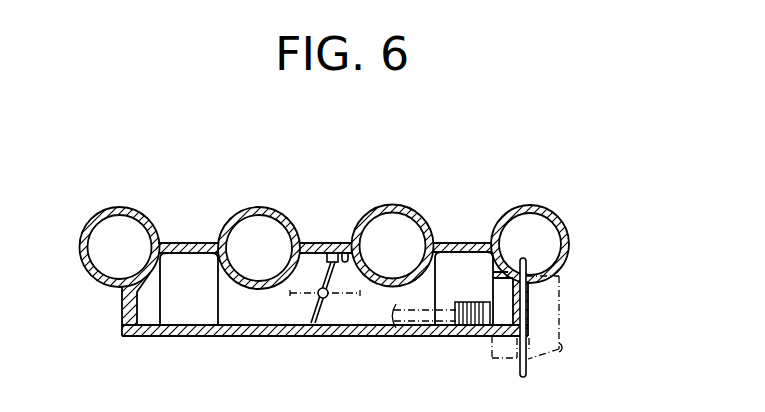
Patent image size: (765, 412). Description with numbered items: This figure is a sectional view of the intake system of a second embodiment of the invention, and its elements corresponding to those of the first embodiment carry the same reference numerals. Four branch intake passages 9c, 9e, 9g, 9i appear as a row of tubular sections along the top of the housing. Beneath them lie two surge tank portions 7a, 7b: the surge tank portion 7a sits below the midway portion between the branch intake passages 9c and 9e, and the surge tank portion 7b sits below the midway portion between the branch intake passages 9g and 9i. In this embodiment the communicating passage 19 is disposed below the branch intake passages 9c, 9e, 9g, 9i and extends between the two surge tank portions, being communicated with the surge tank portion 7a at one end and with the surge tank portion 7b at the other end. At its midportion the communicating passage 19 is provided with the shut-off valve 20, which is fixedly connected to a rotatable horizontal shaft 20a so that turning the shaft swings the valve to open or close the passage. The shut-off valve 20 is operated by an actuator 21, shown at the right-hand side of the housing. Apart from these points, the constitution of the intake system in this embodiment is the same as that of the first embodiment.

The branch intake passage 9c is at (121, 207).
The branch intake passage 9e is at (245, 208).
The branch intake passage 9g is at (395, 206).
The branch intake passage 9i is at (528, 207).
The surge tank portion 7a is at (188, 293).
The surge tank portion 7b is at (447, 282).
The communicating passage 19 is at (345, 253).
The shut-off valve 20 is at (328, 256).
The rotatable horizontal shaft 20a is at (327, 298).
The actuator 21 is at (568, 358).